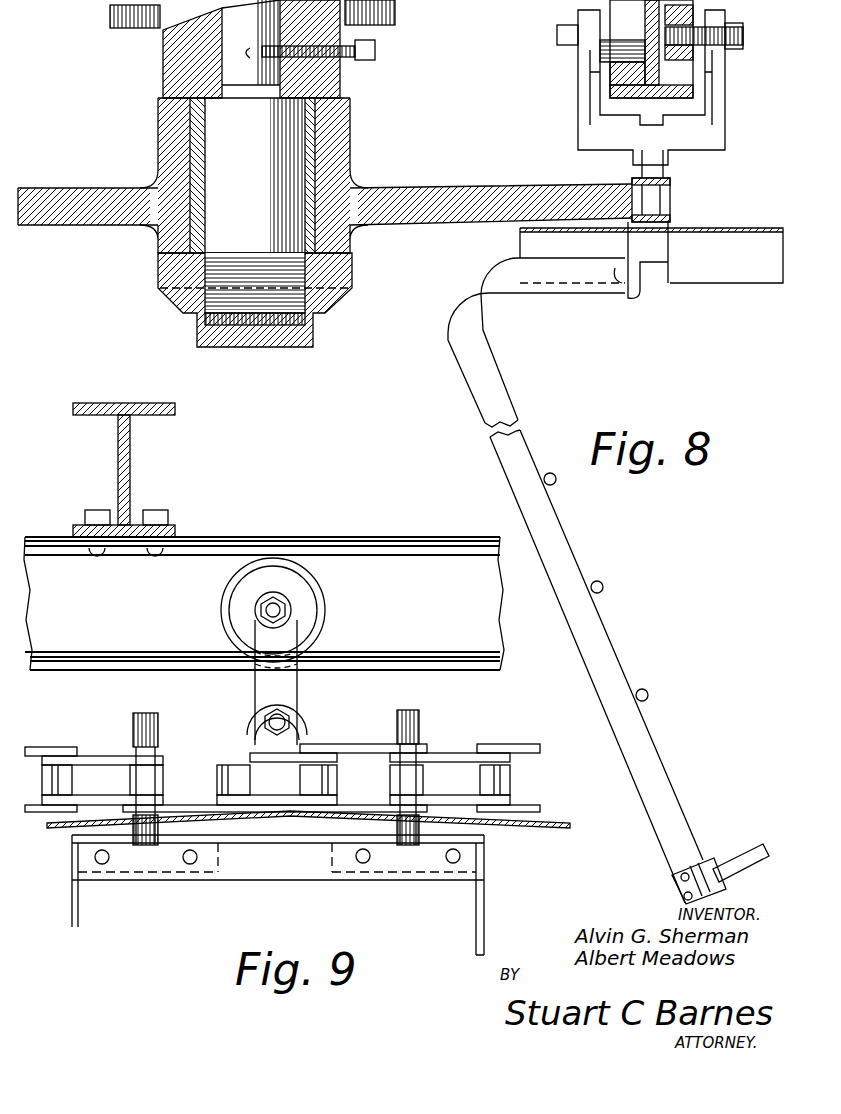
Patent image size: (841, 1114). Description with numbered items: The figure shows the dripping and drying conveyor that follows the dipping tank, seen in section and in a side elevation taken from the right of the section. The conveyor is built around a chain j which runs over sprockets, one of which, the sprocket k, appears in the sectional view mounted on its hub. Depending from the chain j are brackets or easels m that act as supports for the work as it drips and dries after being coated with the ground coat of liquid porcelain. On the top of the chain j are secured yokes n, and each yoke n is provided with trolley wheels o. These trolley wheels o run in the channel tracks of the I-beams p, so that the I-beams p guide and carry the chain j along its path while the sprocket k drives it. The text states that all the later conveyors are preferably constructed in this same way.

In FIG. 8, the sprocket k is at (468, 190).
In FIG. 8, the yoke n is at (725, 100).
In FIG. 9, the yoke n is at (298, 680).
In FIG. 8, the chain j is at (672, 180).
In FIG. 9, the chain j is at (490, 742).
In FIG. 8, the bracket or easel m is at (477, 383).
In FIG. 9, the bracket or easel m is at (484, 912).
In FIG. 9, the I-beam p is at (400, 555).
In FIG. 9, the trolley wheel o is at (320, 610).